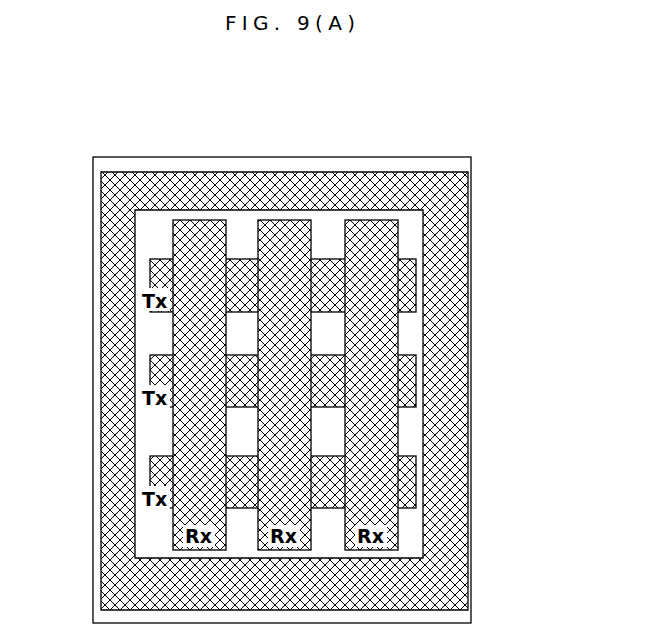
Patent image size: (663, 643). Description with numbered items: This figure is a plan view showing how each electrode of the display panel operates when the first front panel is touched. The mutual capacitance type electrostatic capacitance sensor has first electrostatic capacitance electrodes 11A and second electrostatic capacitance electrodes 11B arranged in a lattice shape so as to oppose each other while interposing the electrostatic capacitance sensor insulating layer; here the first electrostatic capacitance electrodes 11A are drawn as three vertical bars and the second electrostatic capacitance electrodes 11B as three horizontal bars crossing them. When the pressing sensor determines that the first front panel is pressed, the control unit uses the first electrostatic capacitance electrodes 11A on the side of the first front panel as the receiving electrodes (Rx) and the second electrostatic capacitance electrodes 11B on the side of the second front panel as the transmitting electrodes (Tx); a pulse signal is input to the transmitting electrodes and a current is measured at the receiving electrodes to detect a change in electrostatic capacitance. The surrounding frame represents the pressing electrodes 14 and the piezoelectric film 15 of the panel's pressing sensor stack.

The pressing electrodes 14 is at (405, 175).
The piezoelectric film 15 is at (420, 328).
The first electrostatic capacitance electrodes 11A is at (370, 223).
The second electrostatic capacitance electrodes 11B is at (150, 462).